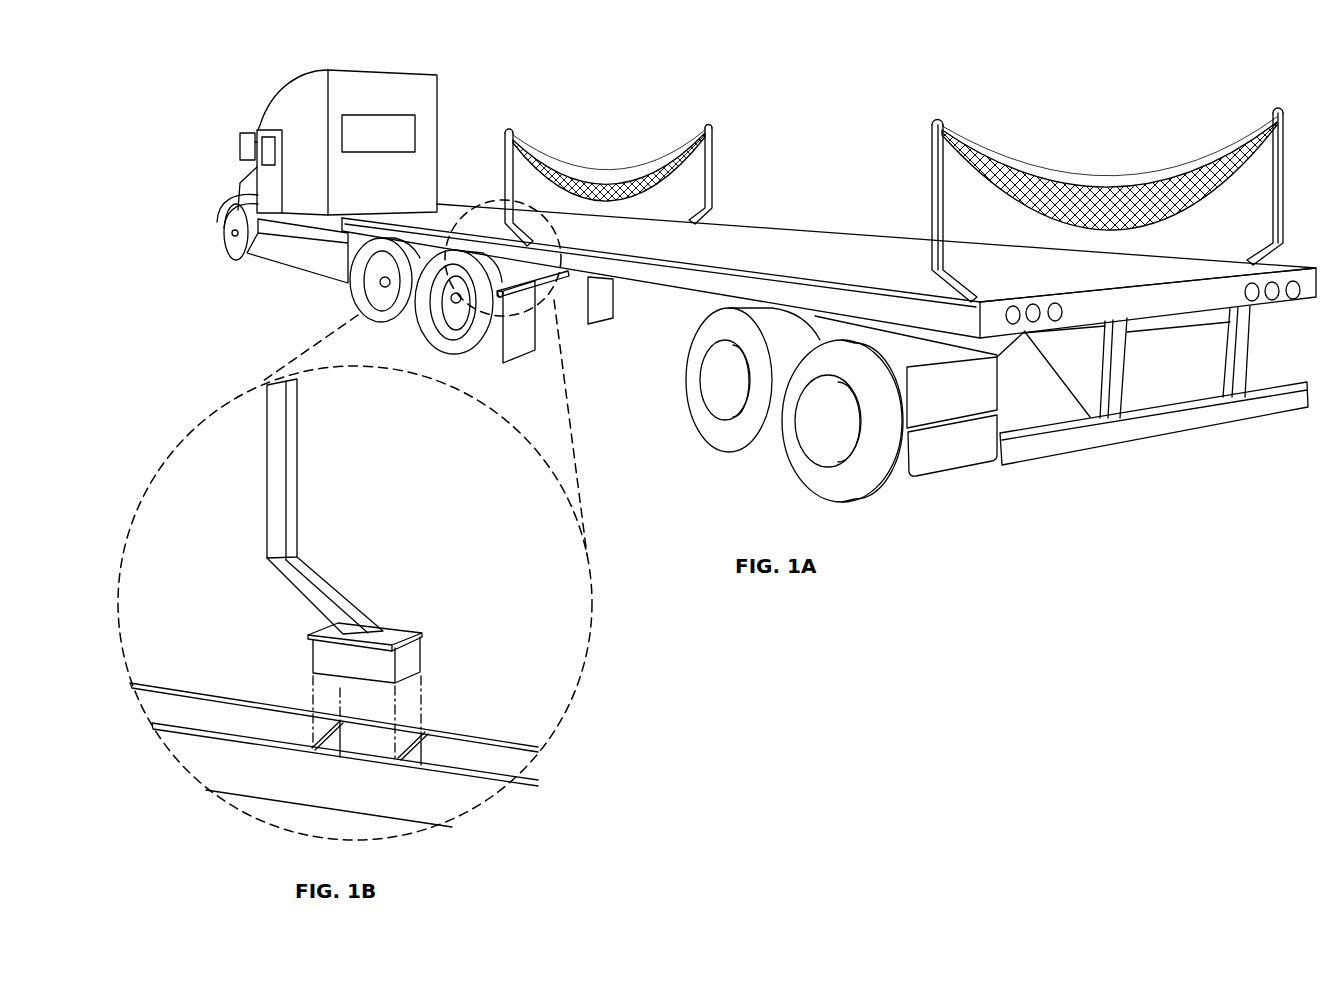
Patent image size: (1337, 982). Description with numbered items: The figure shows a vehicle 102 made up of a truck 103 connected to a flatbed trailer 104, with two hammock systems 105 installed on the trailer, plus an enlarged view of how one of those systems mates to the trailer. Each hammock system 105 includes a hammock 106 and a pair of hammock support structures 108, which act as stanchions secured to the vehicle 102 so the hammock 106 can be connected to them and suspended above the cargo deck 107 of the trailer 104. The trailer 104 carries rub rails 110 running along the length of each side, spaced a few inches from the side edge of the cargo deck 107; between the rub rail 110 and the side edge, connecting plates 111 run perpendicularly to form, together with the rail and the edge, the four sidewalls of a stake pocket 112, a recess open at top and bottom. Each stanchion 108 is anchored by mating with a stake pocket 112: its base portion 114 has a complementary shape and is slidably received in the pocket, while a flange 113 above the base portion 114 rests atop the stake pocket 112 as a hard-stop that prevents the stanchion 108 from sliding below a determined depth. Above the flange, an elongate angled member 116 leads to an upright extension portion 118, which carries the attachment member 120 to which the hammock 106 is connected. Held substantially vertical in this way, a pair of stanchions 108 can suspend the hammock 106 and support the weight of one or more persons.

In FIG. 1A, the vehicle 102 is at (222, 78).
In FIG. 1A, the truck 103 is at (438, 113).
In FIG. 1A, the flatbed trailer 104 is at (762, 227).
In FIG. 1A, the hammock system 105 is at (702, 103).
In FIG. 1A, the hammock 106 is at (556, 158).
In FIG. 1A, the cargo deck 107 is at (829, 253).
In FIG. 1B, the cargo deck 107 is at (334, 667).
In FIG. 1A, the hammock support structure 108 is at (504, 168).
In FIG. 1B, the hammock support structure 108 is at (420, 495).
In FIG. 1A, the rub rail 110 is at (688, 262).
In FIG. 1B, the rub rail 110 is at (220, 730).
In FIG. 1B, the connecting plate 111 is at (318, 730).
In FIG. 1B, the stake pocket 112 is at (379, 740).
In FIG. 1B, the flange 113 is at (414, 628).
In FIG. 1B, the base portion 114 is at (422, 654).
In FIG. 1B, the elongate angled member 116 is at (334, 588).
In FIG. 1B, the extension portion 118 is at (296, 524).
In FIG. 1A, the attachment member 120 is at (937, 125).